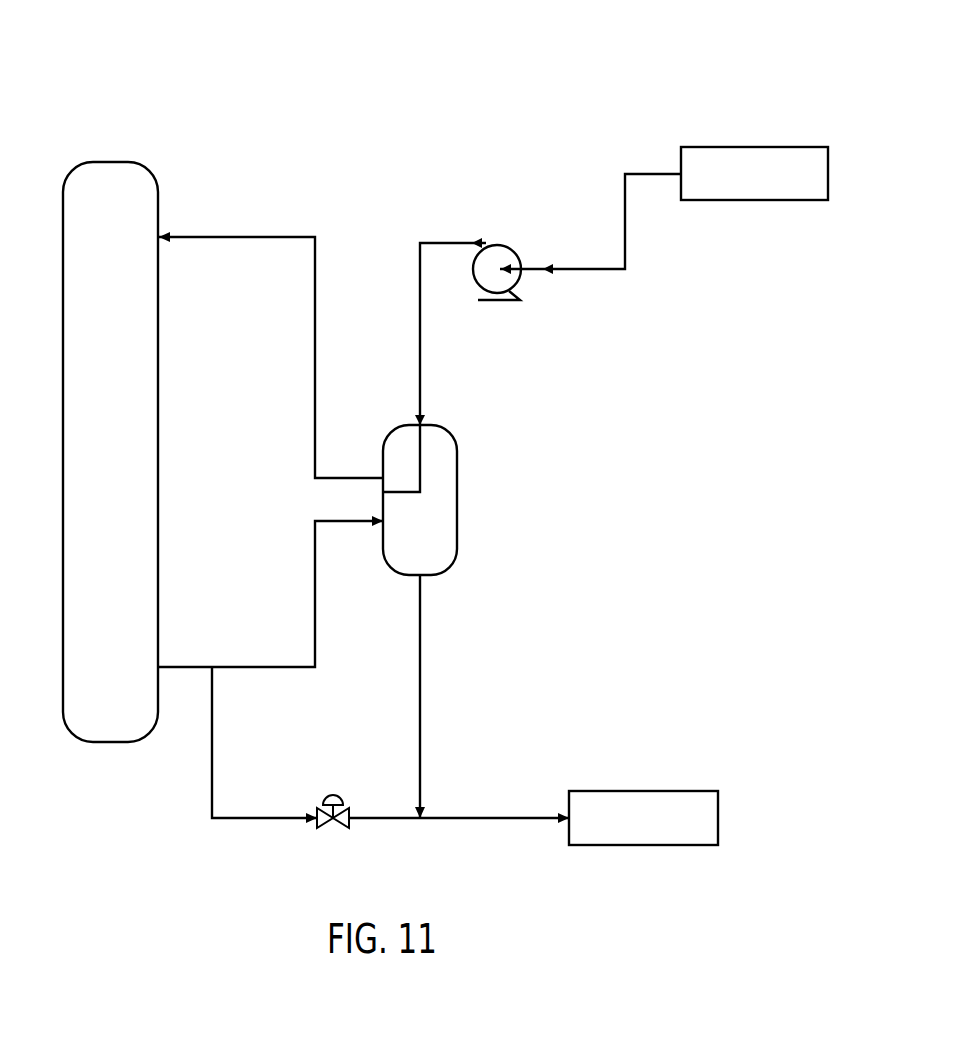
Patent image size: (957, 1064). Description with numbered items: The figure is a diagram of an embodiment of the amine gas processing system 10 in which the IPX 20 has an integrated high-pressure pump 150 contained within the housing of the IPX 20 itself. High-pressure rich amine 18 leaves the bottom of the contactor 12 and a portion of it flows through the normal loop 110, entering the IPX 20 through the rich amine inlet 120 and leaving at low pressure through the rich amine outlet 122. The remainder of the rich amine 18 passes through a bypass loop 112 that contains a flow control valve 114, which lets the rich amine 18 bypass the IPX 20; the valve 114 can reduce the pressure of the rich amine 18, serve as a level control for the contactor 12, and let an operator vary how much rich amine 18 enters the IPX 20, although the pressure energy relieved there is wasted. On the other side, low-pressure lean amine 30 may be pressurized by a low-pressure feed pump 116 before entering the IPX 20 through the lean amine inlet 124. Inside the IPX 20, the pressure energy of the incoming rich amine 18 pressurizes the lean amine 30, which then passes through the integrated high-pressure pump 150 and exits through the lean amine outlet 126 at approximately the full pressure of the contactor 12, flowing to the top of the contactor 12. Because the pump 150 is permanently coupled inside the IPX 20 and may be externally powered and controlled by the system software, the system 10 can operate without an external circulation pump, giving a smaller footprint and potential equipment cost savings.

The amine gas processing system 10 is at (406, 74).
The contactor 12 is at (159, 392).
The rich amine 18 is at (645, 790).
The IPX 20 is at (458, 498).
The lean amine 30 is at (755, 146).
The normal loop 110 is at (300, 578).
The bypass loop 112 is at (226, 733).
The flow control valve 114 is at (337, 797).
The low-pressure feed pump 116 is at (508, 246).
The rich amine inlet 120 is at (347, 527).
The rich amine outlet 122 is at (423, 666).
The lean amine inlet 124 is at (423, 378).
The lean amine outlet 126 is at (331, 477).
The integrated high-pressure pump 150 is at (390, 430).